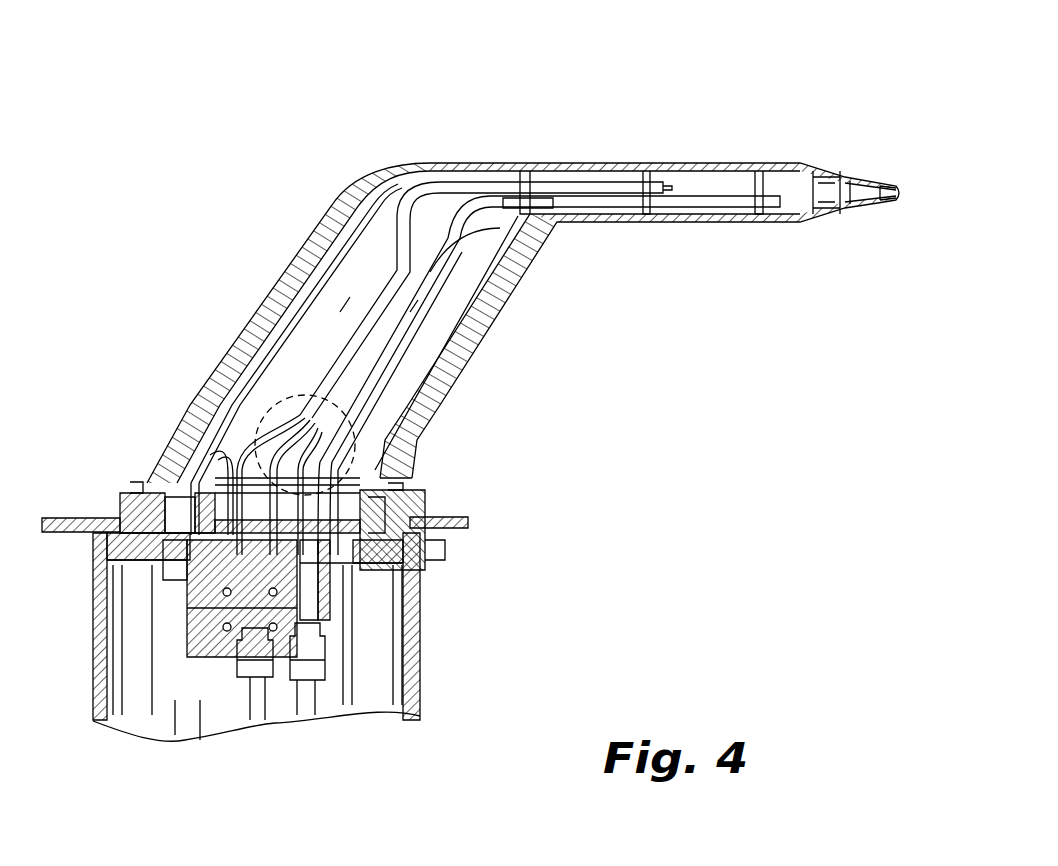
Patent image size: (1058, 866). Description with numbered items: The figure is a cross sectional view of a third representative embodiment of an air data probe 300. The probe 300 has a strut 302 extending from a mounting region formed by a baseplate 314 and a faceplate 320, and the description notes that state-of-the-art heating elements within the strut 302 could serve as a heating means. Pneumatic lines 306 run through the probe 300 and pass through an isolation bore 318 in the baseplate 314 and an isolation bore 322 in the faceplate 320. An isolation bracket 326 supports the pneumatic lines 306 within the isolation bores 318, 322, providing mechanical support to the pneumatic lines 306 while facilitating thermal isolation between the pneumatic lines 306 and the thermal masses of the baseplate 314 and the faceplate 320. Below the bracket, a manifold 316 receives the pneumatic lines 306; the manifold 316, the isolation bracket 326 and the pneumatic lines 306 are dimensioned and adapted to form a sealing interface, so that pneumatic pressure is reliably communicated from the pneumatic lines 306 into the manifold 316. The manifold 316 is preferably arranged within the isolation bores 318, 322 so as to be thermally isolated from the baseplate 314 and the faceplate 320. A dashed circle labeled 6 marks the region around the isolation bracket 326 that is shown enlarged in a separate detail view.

The probe 300 is at (676, 101).
The strut 302 is at (520, 283).
The pneumatic lines 306 is at (378, 294).
The baseplate 314 is at (422, 470).
The manifold 316 is at (195, 705).
The isolation bore 318 is at (214, 458).
The faceplate 320 is at (446, 514).
The isolation bore 322 is at (113, 548).
The isolation bracket 326 is at (198, 498).
The detail region of FIG. 6 is at (265, 421).